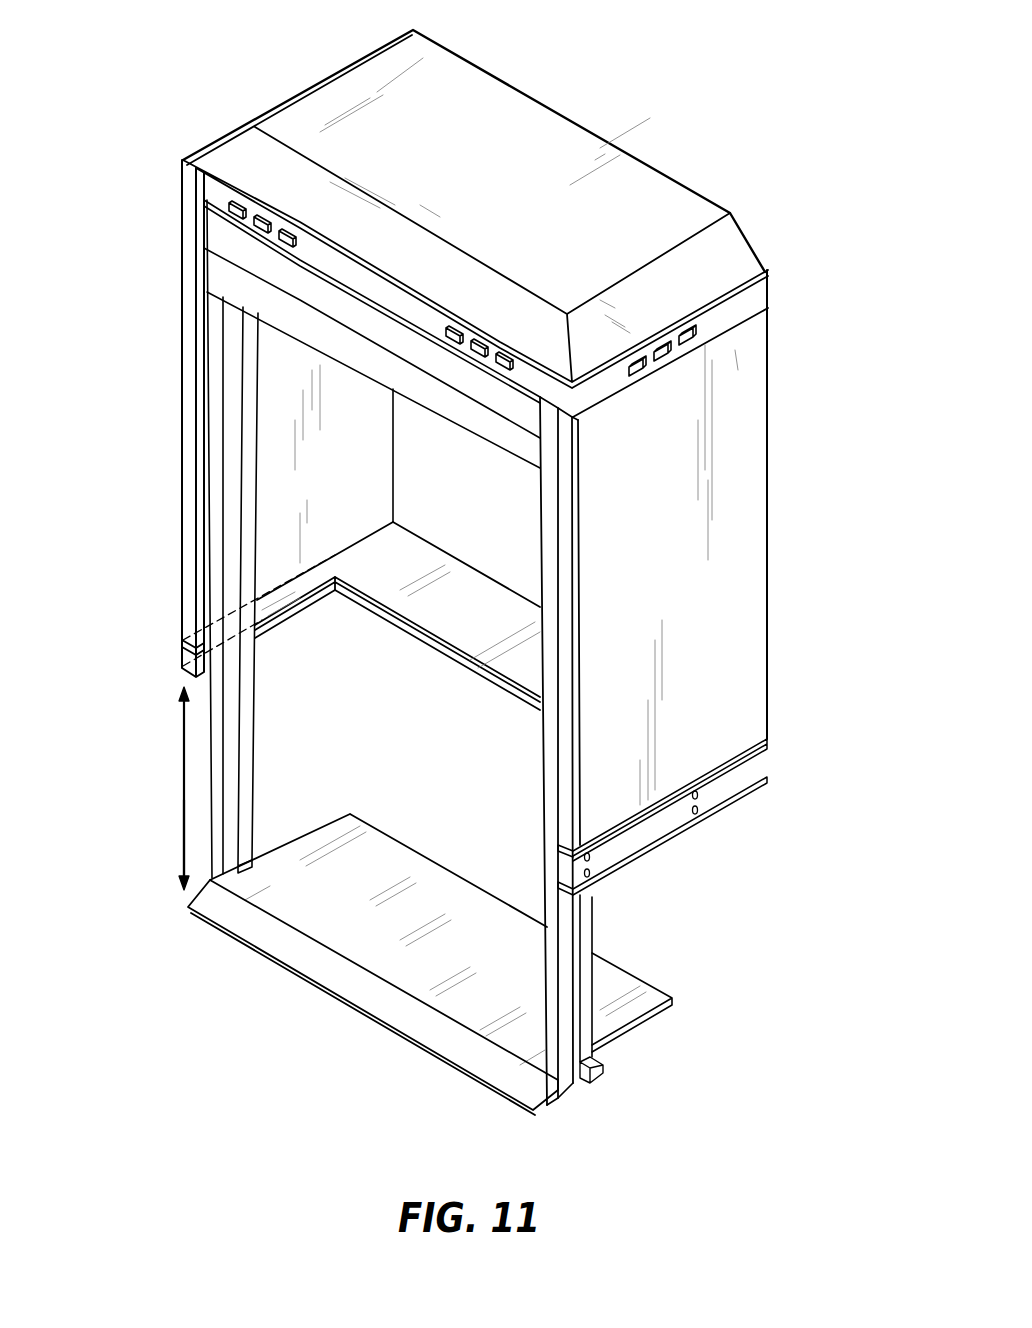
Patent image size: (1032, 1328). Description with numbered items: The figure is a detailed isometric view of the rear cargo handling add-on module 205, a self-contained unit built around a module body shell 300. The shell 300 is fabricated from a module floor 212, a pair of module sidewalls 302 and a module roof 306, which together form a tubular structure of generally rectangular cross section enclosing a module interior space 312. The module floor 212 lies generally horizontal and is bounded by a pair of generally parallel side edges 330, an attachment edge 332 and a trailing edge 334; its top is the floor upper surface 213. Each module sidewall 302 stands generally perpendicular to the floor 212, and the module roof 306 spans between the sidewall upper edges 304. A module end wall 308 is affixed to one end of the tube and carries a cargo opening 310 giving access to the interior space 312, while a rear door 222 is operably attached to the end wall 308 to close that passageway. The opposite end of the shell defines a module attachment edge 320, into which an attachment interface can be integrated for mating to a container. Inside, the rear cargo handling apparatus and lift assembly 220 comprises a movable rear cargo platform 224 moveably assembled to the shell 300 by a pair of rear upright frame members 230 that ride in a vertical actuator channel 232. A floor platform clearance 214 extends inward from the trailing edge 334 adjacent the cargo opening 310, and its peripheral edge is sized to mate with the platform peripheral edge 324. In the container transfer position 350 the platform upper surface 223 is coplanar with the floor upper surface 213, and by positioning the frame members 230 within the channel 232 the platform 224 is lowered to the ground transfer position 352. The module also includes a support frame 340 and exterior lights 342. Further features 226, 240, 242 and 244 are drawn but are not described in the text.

The rear cargo handling add-on module 205 is at (474, 581).
The module roof 306 is at (385, 125).
The exterior lights 342 is at (233, 212).
The sidewall upper edges 304 is at (693, 300).
The rear door 222 is at (253, 299).
The cargo opening 310 is at (529, 506).
The module end wall 308 is at (190, 430).
The vertical actuator channel 232 is at (240, 469).
The channel inner rail 244 is at (262, 514).
The module interior space 312 is at (387, 556).
The trailing edge 334 is at (182, 612).
The container transfer position 350 is at (182, 690).
The ground transfer position 352 is at (182, 886).
The rear upright frame members 230 is at (215, 858).
The floor front lip 226 is at (300, 952).
The rear cargo handling apparatus and lift assembly 220 is at (435, 973).
The foot 240 is at (596, 1082).
The platform peripheral edge 324 is at (635, 1032).
The right lower post 242 is at (583, 945).
The module body shell 300 is at (706, 734).
The module sidewalls 302 is at (764, 537).
The module attachment edge 320 is at (770, 532).
The floor upper surface 213 is at (483, 595).
The attachment edge 332 is at (432, 540).
The side edges 330 is at (375, 535).
The floor platform clearance 214 is at (312, 592).
The support frame 340 is at (270, 628).
The module floor 212 is at (397, 596).
The platform upper surface 223 is at (405, 859).
The movable rear cargo platform 224 is at (470, 915).